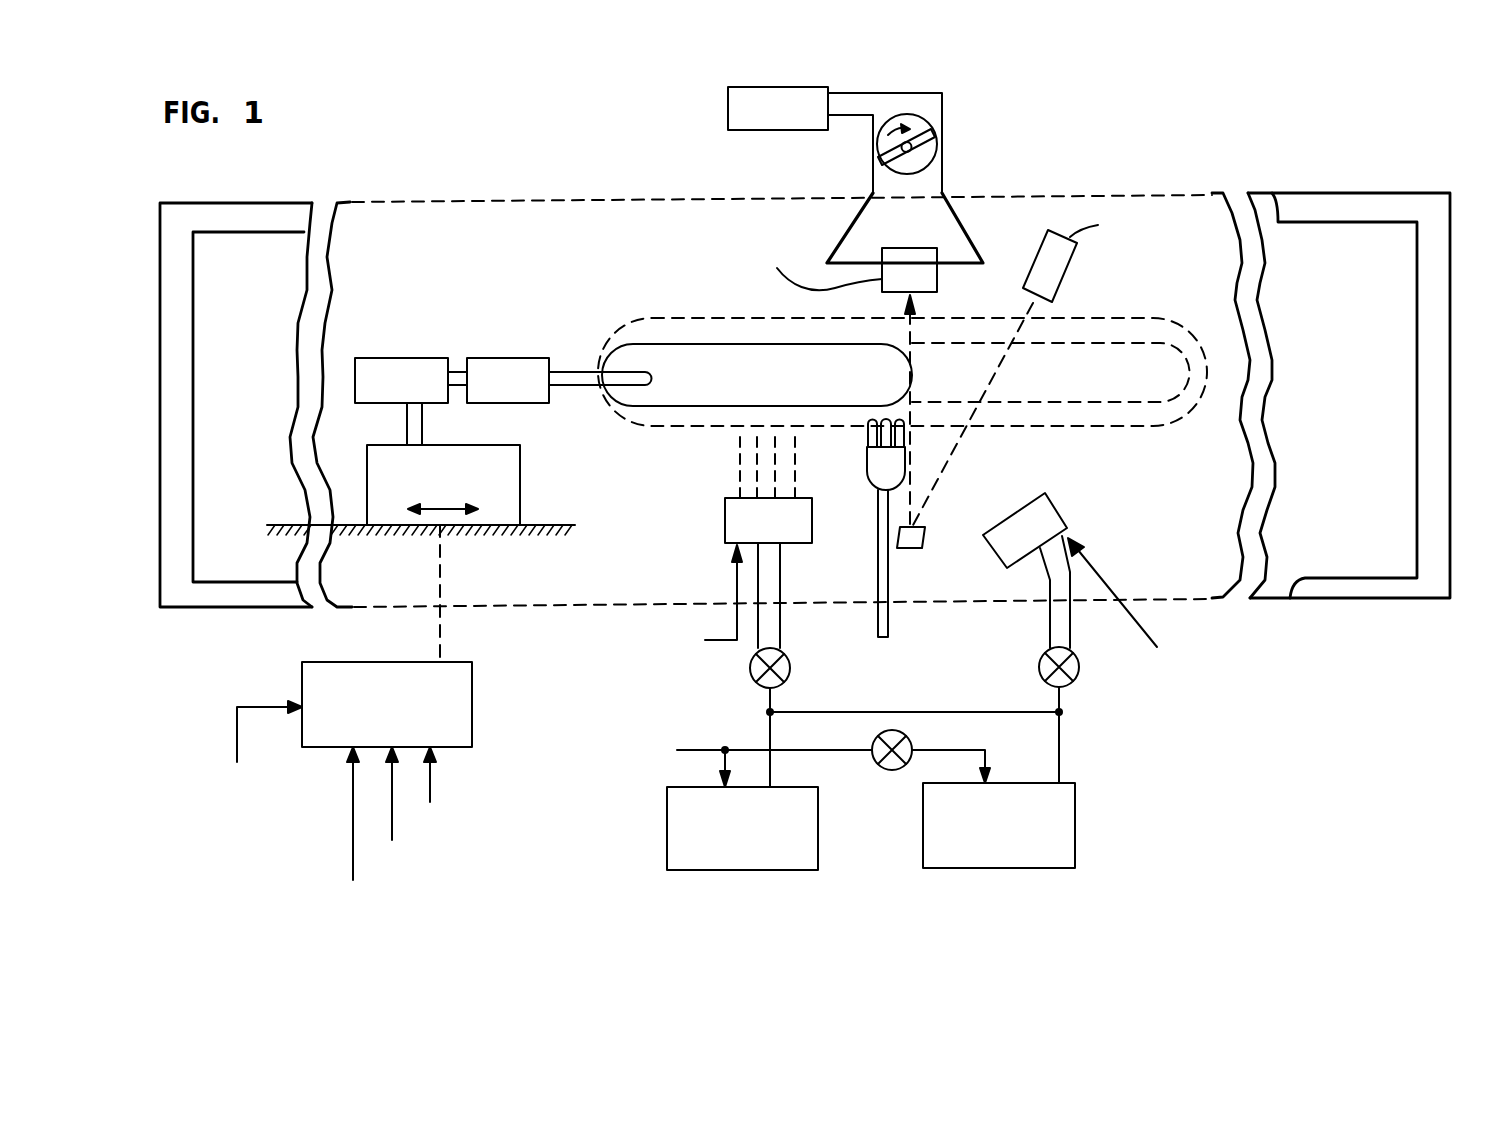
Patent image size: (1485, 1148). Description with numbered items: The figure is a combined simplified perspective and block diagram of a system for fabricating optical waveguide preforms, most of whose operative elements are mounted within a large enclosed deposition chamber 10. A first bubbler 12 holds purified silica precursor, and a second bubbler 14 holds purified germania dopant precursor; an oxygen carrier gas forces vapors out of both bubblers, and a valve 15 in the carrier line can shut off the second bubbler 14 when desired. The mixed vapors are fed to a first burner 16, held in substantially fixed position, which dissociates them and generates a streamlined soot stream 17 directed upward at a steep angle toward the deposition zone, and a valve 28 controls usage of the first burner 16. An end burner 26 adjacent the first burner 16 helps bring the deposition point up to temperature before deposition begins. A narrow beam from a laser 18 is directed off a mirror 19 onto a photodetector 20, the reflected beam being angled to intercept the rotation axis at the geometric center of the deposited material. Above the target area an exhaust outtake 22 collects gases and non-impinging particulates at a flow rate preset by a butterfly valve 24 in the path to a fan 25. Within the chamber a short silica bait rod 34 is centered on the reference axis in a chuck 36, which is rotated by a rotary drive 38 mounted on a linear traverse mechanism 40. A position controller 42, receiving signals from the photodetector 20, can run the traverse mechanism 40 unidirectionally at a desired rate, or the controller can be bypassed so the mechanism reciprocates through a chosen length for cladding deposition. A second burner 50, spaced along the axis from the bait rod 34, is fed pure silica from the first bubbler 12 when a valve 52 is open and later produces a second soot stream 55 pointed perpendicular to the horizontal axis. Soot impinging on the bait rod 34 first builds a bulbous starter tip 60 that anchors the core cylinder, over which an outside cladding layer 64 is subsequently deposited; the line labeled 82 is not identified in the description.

The deposition chamber 10 is at (1429, 192).
The first bubbler 12 is at (667, 822).
The second bubbler 14 is at (1075, 818).
The valve 15 is at (882, 772).
The first burner 16 is at (1058, 508).
The soot stream 17 is at (997, 477).
The laser 18 is at (1062, 281).
The mirror 19 is at (925, 548).
The photodetector 20 is at (937, 280).
The exhaust outtake 22 is at (967, 222).
The butterfly valve 24 is at (925, 147).
The fan 25 is at (728, 112).
The end burner 26 is at (867, 488).
The valve 28 is at (1078, 676).
The bait rod 34 is at (570, 370).
The chuck 36 is at (530, 349).
The rotary drive 38 is at (425, 349).
The linear traverse mechanism 40 is at (510, 445).
The position controller 42 is at (472, 722).
The second burner 50 is at (725, 517).
The valve 52 is at (752, 676).
The second soot stream 55 is at (755, 468).
The bulbous starter tip 60 is at (672, 395).
The outside cladding layer 64 is at (1108, 320).
The preform core 82 is at (722, 388).